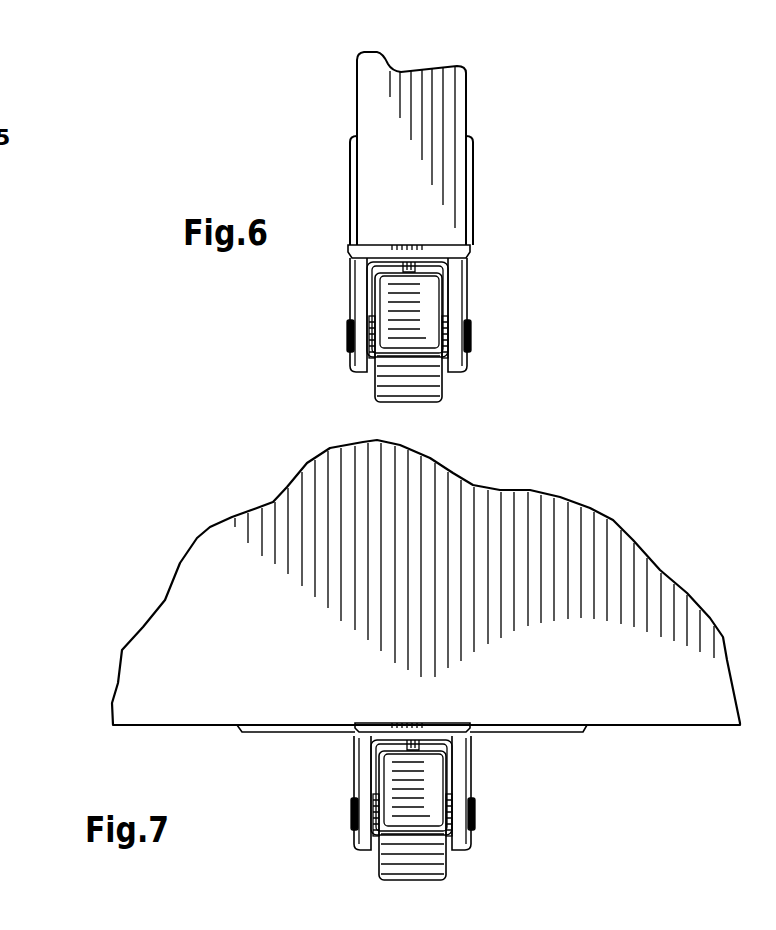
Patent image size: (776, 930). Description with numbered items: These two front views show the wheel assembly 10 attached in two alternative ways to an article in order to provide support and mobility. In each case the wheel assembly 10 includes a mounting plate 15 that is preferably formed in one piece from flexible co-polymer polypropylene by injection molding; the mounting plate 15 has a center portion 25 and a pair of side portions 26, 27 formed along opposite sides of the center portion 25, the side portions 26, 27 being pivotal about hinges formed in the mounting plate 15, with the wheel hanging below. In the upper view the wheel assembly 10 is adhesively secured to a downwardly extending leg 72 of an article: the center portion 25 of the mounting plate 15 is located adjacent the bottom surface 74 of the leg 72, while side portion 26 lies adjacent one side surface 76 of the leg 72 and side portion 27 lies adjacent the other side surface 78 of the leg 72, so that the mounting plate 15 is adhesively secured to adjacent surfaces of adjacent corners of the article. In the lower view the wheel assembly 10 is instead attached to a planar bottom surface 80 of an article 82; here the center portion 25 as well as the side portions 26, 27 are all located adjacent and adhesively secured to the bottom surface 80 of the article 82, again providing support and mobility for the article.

In FIG. 6, the wheel assembly 10 is at (483, 305).
In FIG. 7, the wheel assembly 10 is at (485, 770).
In FIG. 6, the mounting plate 15 is at (338, 265).
In FIG. 6, the center portion 25 is at (450, 247).
In FIG. 7, the center portion 25 is at (382, 725).
In FIG. 6, the side portion 26 is at (349, 157).
In FIG. 7, the side portion 26 is at (277, 725).
In FIG. 6, the side portion 27 is at (474, 172).
In FIG. 7, the side portion 27 is at (520, 725).
In FIG. 6, the leg 72 is at (409, 233).
In FIG. 6, the bottom surface 74 is at (375, 246).
In FIG. 6, the side surface 76 is at (357, 97).
In FIG. 6, the side surface 78 is at (468, 100).
In FIG. 7, the bottom surface 80 is at (652, 725).
In FIG. 7, the article 82 is at (577, 669).